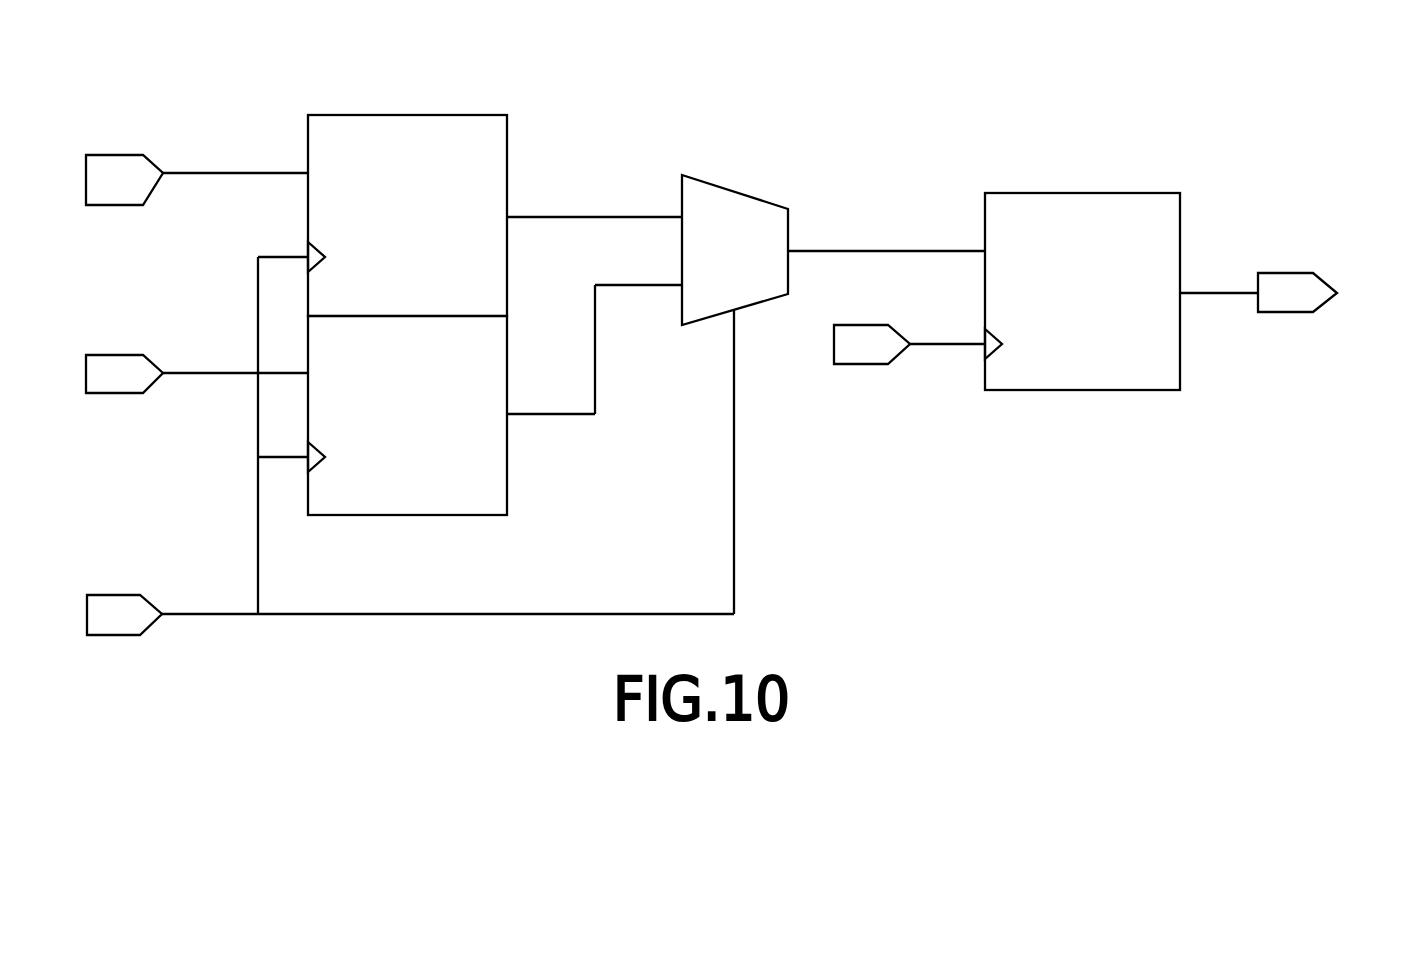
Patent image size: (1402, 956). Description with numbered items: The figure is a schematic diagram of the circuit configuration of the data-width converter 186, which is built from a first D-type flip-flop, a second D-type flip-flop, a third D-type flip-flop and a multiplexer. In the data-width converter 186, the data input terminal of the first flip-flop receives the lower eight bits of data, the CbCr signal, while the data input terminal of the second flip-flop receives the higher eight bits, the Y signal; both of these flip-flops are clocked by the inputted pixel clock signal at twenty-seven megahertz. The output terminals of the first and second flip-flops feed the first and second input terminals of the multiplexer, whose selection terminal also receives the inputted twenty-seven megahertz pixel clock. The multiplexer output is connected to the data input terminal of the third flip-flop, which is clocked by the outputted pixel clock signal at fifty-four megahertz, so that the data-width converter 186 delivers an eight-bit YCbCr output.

The data-width converter 186 is at (707, 332).